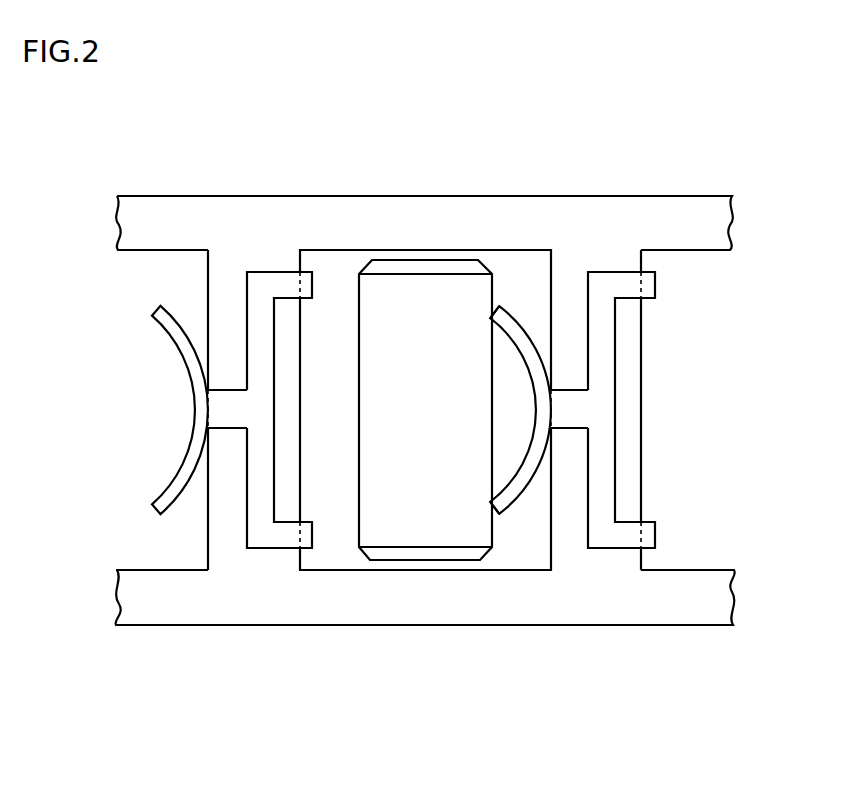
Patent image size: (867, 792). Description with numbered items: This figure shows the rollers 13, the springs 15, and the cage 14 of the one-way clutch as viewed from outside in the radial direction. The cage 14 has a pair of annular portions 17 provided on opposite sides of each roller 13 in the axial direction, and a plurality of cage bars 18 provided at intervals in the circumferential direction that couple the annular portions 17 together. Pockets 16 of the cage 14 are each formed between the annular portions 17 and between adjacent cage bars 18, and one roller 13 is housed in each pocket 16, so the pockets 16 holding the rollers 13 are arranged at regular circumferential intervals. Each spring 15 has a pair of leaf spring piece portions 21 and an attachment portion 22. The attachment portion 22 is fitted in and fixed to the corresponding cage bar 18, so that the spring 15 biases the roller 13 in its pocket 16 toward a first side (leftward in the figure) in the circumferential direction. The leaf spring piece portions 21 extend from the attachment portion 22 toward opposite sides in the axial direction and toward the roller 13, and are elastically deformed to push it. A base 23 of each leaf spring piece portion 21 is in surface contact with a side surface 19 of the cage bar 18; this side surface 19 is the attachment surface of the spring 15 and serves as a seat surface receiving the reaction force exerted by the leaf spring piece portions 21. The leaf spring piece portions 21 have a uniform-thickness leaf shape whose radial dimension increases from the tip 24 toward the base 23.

The roller 13 is at (426, 288).
The cage 14 is at (690, 625).
The spring 15 is at (275, 272).
The pocket 16 is at (332, 277).
The annular portion 17 is at (597, 222).
The cage bar 18 is at (225, 290).
The side surface 19 is at (548, 516).
The leaf spring piece portion 21 is at (528, 350).
The attachment portion 22 is at (587, 409).
The base 23 is at (549, 409).
The tip 24 is at (493, 315).